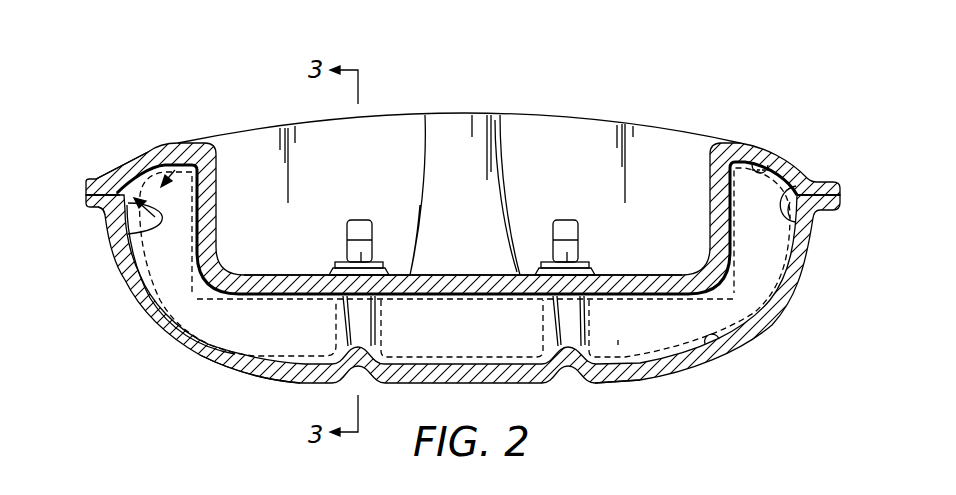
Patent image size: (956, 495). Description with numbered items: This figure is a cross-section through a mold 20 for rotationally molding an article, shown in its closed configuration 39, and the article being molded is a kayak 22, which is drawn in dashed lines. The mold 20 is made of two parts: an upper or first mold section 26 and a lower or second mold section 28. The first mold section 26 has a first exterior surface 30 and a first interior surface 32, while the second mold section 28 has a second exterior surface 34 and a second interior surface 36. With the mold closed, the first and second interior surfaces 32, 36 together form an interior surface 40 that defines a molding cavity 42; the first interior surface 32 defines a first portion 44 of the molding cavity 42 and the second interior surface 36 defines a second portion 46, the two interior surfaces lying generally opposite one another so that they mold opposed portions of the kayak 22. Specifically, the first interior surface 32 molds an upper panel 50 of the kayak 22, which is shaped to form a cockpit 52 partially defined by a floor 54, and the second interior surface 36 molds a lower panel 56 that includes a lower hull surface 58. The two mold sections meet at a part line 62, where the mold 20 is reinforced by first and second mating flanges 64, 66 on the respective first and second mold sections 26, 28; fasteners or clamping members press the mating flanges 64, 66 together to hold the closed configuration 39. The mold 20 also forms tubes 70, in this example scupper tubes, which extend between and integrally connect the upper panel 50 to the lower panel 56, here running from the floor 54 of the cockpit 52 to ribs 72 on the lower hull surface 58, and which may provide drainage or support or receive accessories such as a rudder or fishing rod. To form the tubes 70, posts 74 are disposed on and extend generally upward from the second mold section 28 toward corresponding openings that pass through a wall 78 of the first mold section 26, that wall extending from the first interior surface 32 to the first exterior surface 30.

The mold 20 is at (117, 42).
The closed configuration 39 is at (112, 79).
The kayak 22 is at (128, 300).
The first mold section 26 is at (143, 158).
The second mold section 28 is at (232, 376).
The first exterior surface 30 is at (740, 143).
The first interior surface 32 is at (782, 171).
The second exterior surface 34 is at (688, 378).
The second interior surface 36 is at (745, 352).
The interior surface 40 is at (798, 216).
The molding cavity 42 is at (617, 336).
The first portion of the molding cavity 44 is at (172, 172).
The second portion of the molding cavity 46 is at (237, 320).
The upper panel 50 is at (165, 344).
The cockpit 52 is at (445, 213).
The floor 54 is at (428, 302).
The lower panel 56 is at (252, 338).
The lower hull surface 58 is at (448, 345).
The part line 62 is at (157, 215).
The first mating flange 64 is at (97, 177).
The second mating flange 66 is at (90, 213).
The tubes 70 is at (593, 330).
The ribs 72 is at (537, 328).
The posts 74 is at (345, 247).
The wall 78 is at (618, 276).